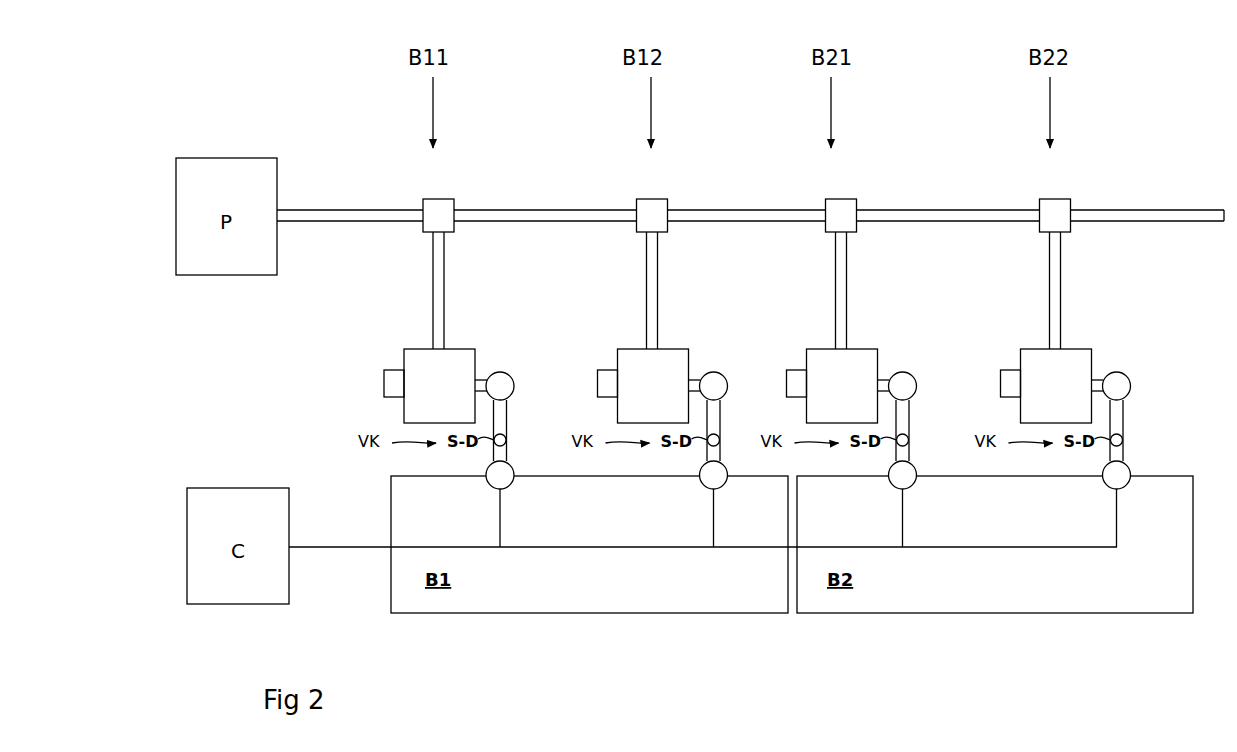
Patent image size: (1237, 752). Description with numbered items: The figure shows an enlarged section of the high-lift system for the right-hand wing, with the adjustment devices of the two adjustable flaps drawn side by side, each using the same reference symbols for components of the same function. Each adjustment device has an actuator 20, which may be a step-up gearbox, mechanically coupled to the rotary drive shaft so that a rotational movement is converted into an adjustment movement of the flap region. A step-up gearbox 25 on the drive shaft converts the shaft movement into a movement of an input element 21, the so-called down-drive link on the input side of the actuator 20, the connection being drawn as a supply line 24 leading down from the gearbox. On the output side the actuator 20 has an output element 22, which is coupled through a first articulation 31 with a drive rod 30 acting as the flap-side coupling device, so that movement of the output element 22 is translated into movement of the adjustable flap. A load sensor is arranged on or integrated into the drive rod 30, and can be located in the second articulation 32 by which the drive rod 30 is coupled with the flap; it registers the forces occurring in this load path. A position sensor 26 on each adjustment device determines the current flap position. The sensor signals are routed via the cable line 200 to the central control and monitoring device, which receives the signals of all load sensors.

The actuator 20 is at (748, 386).
The input element 21 is at (427, 337).
The output element 22 is at (479, 374).
The supply line from bus 24 is at (433, 254).
The step-up gearbox 25 is at (747, 215).
The position sensor 26 is at (393, 384).
The drive rod 30 is at (510, 422).
The first articulation 31 is at (511, 378).
The second articulation 32 is at (489, 466).
The cable line 200 is at (340, 549).